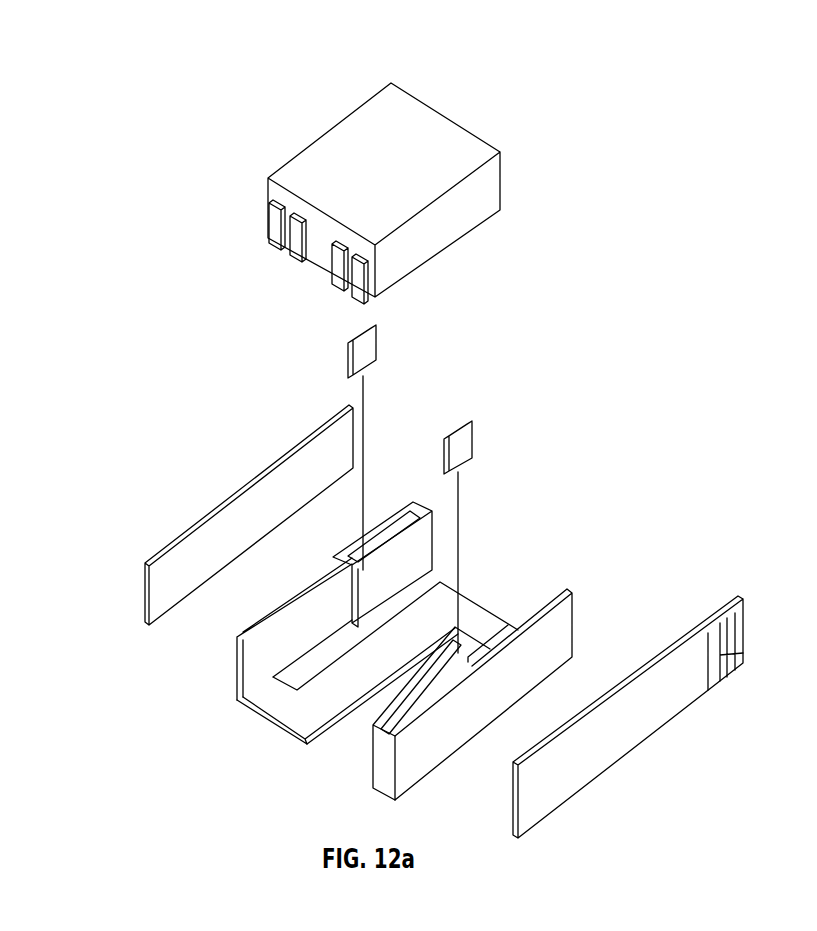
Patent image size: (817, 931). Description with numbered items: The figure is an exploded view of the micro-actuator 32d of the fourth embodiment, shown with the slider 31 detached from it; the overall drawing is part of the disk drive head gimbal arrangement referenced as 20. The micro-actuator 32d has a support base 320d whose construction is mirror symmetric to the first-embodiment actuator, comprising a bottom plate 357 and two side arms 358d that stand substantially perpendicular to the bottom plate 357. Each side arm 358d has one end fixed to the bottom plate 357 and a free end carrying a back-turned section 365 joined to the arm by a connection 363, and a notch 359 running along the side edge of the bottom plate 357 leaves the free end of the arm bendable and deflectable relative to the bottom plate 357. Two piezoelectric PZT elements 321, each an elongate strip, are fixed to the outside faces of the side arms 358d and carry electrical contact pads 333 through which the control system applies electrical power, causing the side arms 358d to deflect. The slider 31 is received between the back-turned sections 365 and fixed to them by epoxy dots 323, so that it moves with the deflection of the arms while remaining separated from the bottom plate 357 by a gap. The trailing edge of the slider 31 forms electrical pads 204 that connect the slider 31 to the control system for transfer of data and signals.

The slider 31 is at (427, 130).
The electrical pads 204 is at (367, 287).
The micro-actuator 32d is at (207, 237).
The energy storage device 20 is at (810, 551).
The epoxy dots 323 is at (350, 349).
The piezoelectric (PZT) elements 321 is at (205, 547).
The electrical contact pads 333 is at (744, 656).
The side arms 358d is at (248, 657).
The support base 320d is at (265, 725).
The notch 359 is at (347, 745).
The bottom plate 357 is at (432, 608).
The back-turned section 365 is at (405, 552).
The connection 363 is at (427, 508).